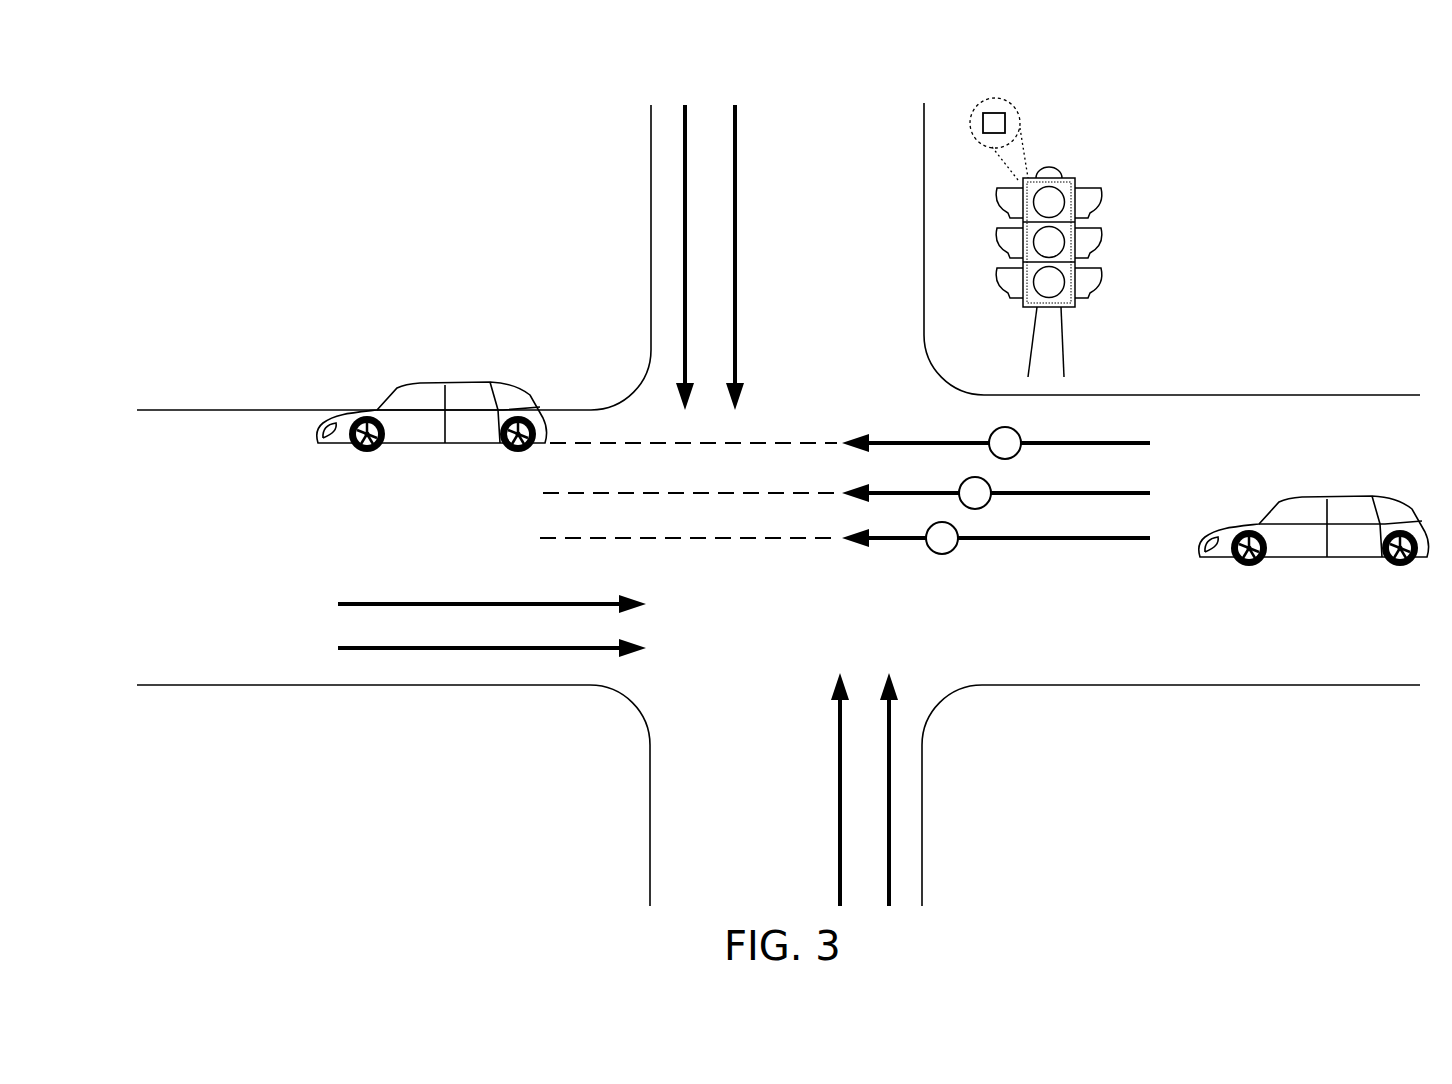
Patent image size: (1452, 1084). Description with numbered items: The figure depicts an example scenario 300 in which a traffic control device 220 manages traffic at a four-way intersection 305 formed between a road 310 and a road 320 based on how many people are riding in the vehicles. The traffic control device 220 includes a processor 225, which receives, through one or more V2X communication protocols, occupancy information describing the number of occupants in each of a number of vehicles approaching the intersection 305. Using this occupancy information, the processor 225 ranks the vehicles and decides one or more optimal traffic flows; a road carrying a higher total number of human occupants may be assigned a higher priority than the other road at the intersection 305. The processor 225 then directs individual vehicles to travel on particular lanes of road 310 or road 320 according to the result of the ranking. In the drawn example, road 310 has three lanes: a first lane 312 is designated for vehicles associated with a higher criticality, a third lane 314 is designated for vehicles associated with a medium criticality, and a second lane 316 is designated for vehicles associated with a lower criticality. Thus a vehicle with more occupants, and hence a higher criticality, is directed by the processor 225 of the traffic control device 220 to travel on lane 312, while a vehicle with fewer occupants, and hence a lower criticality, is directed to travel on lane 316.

The scenario 300 is at (628, 78).
The intersection 305 is at (599, 338).
The road 310 is at (237, 410).
The road 320 is at (651, 230).
The lane 312 is at (1137, 538).
The lane 314 is at (1137, 493).
The lane 316 is at (1137, 443).
The traffic control device 220 is at (1050, 168).
The processor 225 is at (1005, 113).